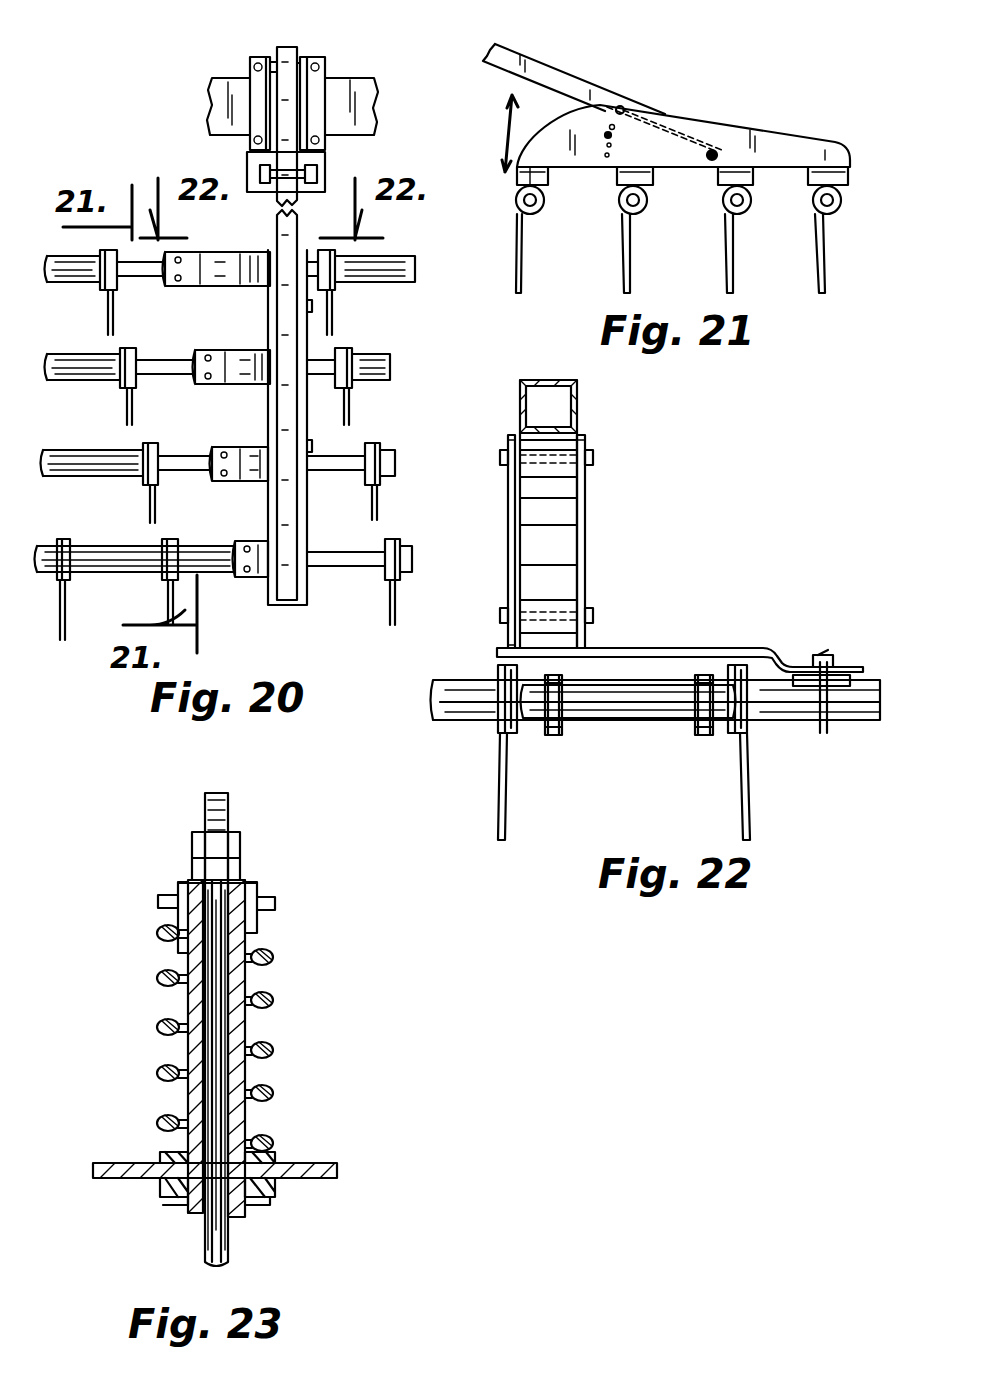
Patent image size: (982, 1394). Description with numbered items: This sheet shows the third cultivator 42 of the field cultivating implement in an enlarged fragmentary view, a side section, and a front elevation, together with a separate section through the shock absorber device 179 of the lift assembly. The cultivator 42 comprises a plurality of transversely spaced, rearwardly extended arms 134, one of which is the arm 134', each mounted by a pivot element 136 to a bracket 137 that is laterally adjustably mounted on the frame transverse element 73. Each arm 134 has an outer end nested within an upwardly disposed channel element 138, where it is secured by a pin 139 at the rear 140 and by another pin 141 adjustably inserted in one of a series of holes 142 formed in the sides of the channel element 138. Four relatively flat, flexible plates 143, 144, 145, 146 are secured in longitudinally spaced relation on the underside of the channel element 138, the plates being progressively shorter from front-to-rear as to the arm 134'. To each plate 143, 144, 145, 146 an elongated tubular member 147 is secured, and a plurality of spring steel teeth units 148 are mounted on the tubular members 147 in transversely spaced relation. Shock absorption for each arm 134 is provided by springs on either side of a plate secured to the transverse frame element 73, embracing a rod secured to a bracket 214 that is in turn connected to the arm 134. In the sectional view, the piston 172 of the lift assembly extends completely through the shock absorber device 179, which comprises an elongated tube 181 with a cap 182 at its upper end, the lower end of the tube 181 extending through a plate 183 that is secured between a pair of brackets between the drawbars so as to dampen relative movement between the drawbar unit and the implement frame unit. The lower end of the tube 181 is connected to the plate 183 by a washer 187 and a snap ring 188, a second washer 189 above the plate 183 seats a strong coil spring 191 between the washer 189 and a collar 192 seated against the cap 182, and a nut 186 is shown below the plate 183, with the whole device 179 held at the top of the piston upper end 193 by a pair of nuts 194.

In FIG. 20, the third cultivator 42 is at (414, 276).
In FIG. 21, the third cultivator 42 is at (845, 284).
In FIG. 20, the frame transverse element 73 is at (225, 90).
In FIG. 20, the arm 134 is at (319, 405).
In FIG. 21, the arm 134 is at (602, 94).
In FIG. 22, the arm 134 is at (599, 406).
In FIG. 20, the arm 134' is at (327, 105).
In FIG. 20, the pivot element 136 is at (272, 55).
In FIG. 20, the bracket 137 is at (320, 72).
In FIG. 20, the channel element 138 is at (268, 415).
In FIG. 21, the channel element 138 is at (770, 140).
In FIG. 22, the channel element 138 is at (585, 543).
In FIG. 20, the pin 139 is at (312, 447).
In FIG. 21, the pin 139 is at (712, 162).
In FIG. 22, the pin 139 is at (593, 615).
In FIG. 20, the rear 140 is at (290, 408).
In FIG. 20, the pin 141 is at (312, 305).
In FIG. 21, the pin 141 is at (624, 108).
In FIG. 22, the pin 141 is at (593, 460).
In FIG. 21, the holes 142 is at (605, 155).
In FIG. 20, the flexible plate 143 is at (240, 252).
In FIG. 21, the flexible plate 143 is at (517, 180).
In FIG. 22, the flexible plate 143 is at (713, 647).
In FIG. 20, the flexible plate 144 is at (215, 350).
In FIG. 21, the flexible plate 144 is at (625, 186).
In FIG. 20, the flexible plate 145 is at (233, 482).
In FIG. 21, the flexible plate 145 is at (755, 185).
In FIG. 20, the flexible plate 146 is at (248, 578).
In FIG. 21, the flexible plate 146 is at (848, 186).
In FIG. 20, the tubular member 147 is at (75, 283).
In FIG. 22, the tubular member 147 is at (810, 722).
In FIG. 20, the spring steel teeth unit 148 is at (356, 286).
In FIG. 21, the spring steel teeth unit 148 is at (543, 229).
In FIG. 22, the spring steel teeth unit 148 is at (487, 740).
In FIG. 23, the piston 172 is at (229, 1250).
In FIG. 23, the shock absorber device 179 is at (325, 970).
In FIG. 23, the elongated tube 181 is at (250, 1033).
In FIG. 23, the cap 182 is at (250, 885).
In FIG. 23, the plate 183 is at (318, 1162).
In FIG. 23, the nut 186 is at (272, 1210).
In FIG. 23, the washer 187 is at (160, 1195).
In FIG. 23, the snap ring 188 is at (175, 1205).
In FIG. 23, the washer 189 is at (165, 1152).
In FIG. 23, the coil spring 191 is at (160, 980).
In FIG. 23, the collar 192 is at (170, 900).
In FIG. 23, the piston upper end 193 is at (205, 800).
In FIG. 23, the nuts 194 is at (195, 840).
In FIG. 20, the bracket 214 is at (258, 170).